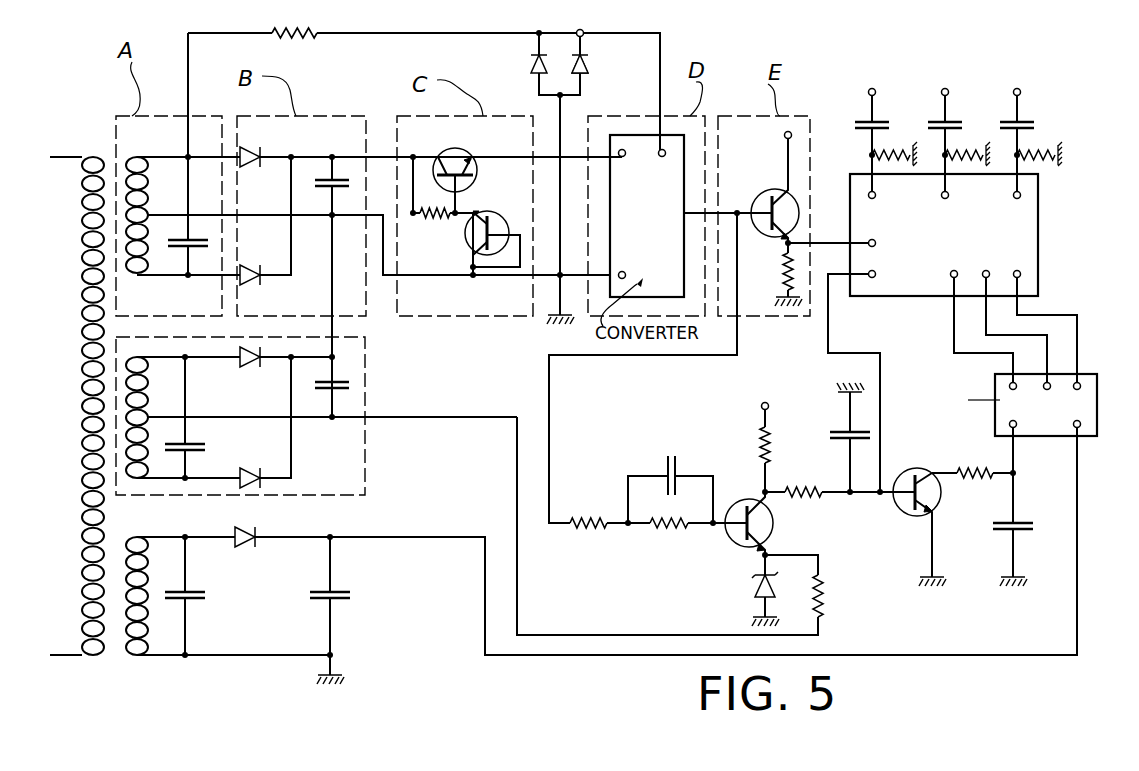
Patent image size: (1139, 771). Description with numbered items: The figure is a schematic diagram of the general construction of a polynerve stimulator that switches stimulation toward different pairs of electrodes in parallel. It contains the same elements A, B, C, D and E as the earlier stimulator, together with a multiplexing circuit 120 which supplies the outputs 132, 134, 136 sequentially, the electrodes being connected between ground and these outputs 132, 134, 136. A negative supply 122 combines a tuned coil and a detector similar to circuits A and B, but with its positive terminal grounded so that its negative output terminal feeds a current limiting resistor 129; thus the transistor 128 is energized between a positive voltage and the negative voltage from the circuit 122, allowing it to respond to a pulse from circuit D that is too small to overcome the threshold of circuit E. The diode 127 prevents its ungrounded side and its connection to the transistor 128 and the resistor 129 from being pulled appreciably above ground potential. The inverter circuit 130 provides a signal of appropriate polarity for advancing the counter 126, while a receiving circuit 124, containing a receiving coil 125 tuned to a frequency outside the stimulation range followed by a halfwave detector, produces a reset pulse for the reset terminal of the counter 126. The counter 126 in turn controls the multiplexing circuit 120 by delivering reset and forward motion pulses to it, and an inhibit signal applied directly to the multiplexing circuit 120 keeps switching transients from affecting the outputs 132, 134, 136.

The multiplexing circuit 120 is at (1021, 255).
The negative supply 122 is at (365, 490).
The receiving circuit 124 is at (238, 606).
The receiving coil 125 is at (142, 573).
The counter 126 is at (1062, 423).
The diode 127 is at (761, 591).
The threshold logic stage transistor 128 is at (732, 542).
The current limiting resistor 129 is at (824, 595).
The inverter circuit 130 is at (898, 512).
The output 132 is at (873, 88).
The output 134 is at (946, 88).
The output 136 is at (1018, 88).